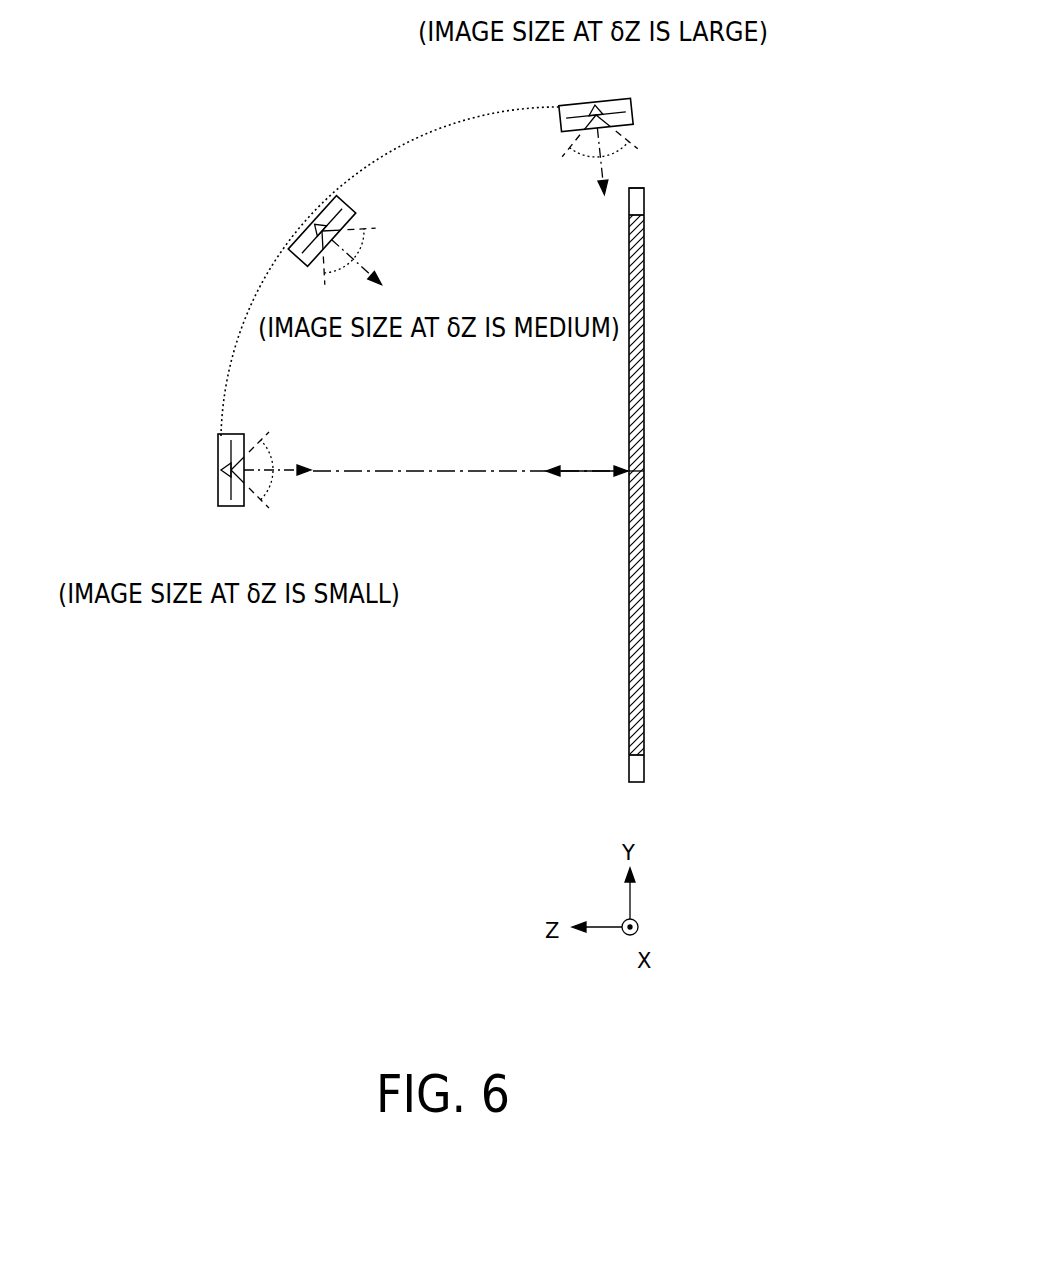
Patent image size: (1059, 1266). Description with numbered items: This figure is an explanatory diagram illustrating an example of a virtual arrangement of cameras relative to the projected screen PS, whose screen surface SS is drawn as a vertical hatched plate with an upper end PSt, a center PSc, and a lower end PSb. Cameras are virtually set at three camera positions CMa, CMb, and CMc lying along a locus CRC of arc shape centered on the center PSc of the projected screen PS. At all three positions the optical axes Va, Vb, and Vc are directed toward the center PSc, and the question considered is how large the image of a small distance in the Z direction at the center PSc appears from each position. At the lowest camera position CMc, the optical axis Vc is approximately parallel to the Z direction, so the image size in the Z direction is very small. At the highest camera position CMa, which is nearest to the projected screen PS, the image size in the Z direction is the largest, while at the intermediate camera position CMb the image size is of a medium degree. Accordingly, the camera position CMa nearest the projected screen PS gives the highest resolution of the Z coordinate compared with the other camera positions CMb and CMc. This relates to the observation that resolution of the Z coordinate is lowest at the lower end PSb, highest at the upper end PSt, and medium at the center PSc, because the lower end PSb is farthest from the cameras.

The camera position CMa is at (623, 103).
The camera position CMb is at (350, 208).
The camera position CMc is at (232, 508).
The locus CRC is at (243, 330).
The screen surface SS is at (630, 200).
The projected screen PS is at (630, 572).
The upper end PSt is at (645, 215).
The center PSc is at (645, 471).
The lower end PSb is at (645, 755).
The optical axis Va is at (589, 215).
The optical axis Vb is at (406, 295).
The optical axis Vc is at (313, 505).